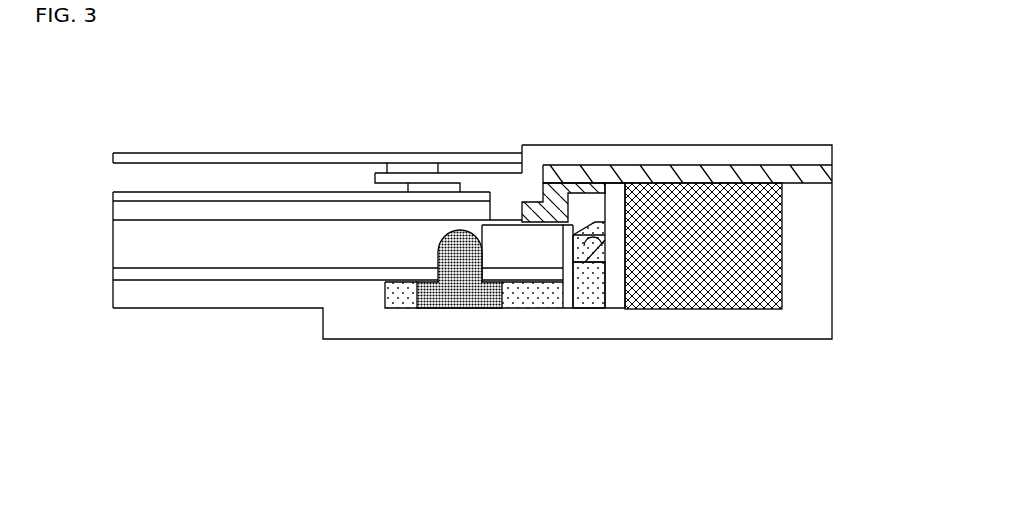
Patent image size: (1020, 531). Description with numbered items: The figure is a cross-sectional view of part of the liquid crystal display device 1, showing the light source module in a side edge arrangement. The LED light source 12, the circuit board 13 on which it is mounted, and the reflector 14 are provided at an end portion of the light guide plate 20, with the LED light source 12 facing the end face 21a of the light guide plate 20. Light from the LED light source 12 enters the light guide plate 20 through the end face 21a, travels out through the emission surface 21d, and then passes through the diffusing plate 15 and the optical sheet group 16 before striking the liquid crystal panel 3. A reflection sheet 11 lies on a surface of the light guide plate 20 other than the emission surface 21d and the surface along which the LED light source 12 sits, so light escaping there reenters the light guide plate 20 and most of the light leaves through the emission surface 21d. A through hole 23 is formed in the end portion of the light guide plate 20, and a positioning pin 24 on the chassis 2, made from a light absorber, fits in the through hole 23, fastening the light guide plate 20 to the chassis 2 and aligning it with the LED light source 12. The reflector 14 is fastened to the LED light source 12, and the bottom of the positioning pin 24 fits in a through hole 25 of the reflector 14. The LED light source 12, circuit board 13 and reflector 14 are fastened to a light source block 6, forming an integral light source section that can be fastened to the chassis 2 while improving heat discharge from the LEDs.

The liquid crystal display device 1 is at (794, 93).
The chassis 2 is at (798, 328).
The liquid crystal panel 3 is at (118, 156).
The light source block 6 is at (705, 302).
The reflection sheet 11 is at (118, 273).
The LED light source 12 is at (598, 232).
The circuit board 13 is at (613, 195).
The reflector 14 is at (593, 300).
The diffusing plate 15 is at (118, 218).
The optical sheet group 16 is at (118, 195).
The light guide plate 20 is at (118, 245).
The end face 21a is at (570, 248).
The emission surface 21d is at (282, 220).
The through hole 23 is at (445, 235).
The positioning pin 24 is at (457, 300).
The through hole 25 is at (515, 290).